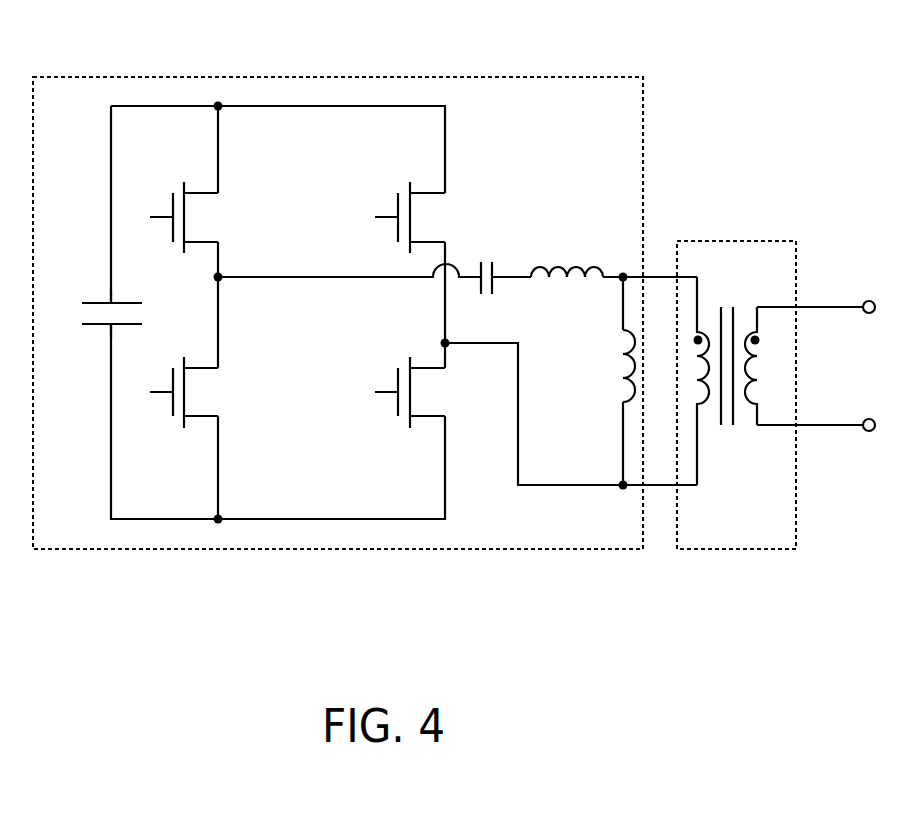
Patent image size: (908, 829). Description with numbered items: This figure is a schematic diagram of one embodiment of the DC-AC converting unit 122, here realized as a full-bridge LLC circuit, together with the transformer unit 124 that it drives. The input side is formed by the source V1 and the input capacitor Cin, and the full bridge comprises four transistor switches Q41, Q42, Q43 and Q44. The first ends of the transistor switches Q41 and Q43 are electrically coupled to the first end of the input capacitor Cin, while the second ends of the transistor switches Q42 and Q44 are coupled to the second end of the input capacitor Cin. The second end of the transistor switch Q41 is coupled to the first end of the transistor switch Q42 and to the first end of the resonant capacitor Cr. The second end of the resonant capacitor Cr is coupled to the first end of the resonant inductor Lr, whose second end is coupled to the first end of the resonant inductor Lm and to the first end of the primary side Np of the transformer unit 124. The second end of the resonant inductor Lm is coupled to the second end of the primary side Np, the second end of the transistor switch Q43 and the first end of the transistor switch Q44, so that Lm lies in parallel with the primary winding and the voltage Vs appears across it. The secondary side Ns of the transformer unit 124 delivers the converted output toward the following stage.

The DC-AC converting unit 122 is at (560, 77).
The transformer unit 124 is at (763, 241).
The transistor switch Q41 is at (211, 218).
The transistor switch Q42 is at (212, 397).
The transistor switch Q43 is at (435, 218).
The transistor switch Q44 is at (438, 396).
The input capacitor Cin is at (120, 335).
The input voltage source V1 is at (77, 314).
The resonant capacitor Cr is at (503, 290).
The resonant inductor Lr is at (571, 289).
The resonant inductor Lm is at (605, 373).
The primary winding voltage Vs is at (648, 366).
The primary side Np is at (698, 367).
The secondary side Ns is at (757, 351).